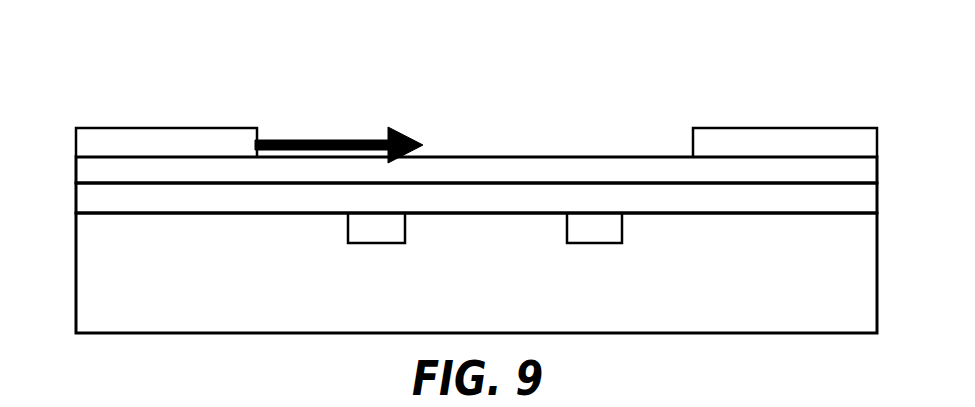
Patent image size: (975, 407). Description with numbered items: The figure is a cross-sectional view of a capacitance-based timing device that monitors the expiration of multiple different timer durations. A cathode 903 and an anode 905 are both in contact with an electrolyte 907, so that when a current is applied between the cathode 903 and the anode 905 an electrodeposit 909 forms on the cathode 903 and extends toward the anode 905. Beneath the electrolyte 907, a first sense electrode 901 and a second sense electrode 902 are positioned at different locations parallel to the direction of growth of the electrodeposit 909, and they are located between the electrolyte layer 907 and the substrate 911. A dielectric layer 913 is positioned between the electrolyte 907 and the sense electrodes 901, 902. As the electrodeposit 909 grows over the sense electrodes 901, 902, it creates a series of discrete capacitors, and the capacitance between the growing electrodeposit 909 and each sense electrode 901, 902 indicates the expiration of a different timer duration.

The first sense electrode 901 is at (387, 244).
The second sense electrode 902 is at (603, 244).
The cathode 903 is at (112, 127).
The anode 905 is at (747, 127).
The electrolyte 907 is at (878, 173).
The electrodeposit 909 is at (290, 138).
The substrate 911 is at (878, 250).
The dielectric layer 913 is at (75, 200).